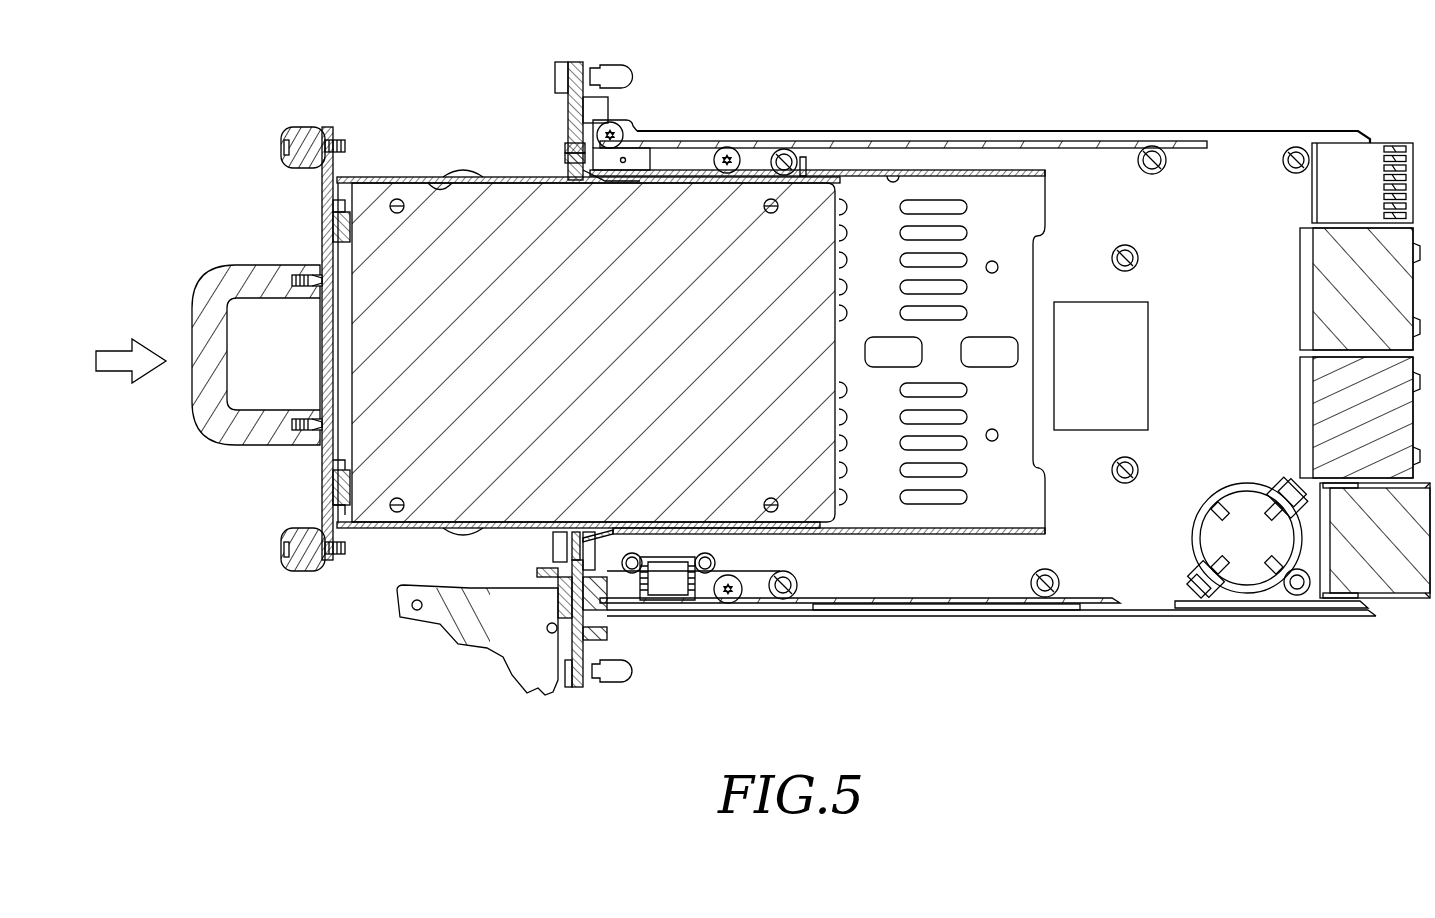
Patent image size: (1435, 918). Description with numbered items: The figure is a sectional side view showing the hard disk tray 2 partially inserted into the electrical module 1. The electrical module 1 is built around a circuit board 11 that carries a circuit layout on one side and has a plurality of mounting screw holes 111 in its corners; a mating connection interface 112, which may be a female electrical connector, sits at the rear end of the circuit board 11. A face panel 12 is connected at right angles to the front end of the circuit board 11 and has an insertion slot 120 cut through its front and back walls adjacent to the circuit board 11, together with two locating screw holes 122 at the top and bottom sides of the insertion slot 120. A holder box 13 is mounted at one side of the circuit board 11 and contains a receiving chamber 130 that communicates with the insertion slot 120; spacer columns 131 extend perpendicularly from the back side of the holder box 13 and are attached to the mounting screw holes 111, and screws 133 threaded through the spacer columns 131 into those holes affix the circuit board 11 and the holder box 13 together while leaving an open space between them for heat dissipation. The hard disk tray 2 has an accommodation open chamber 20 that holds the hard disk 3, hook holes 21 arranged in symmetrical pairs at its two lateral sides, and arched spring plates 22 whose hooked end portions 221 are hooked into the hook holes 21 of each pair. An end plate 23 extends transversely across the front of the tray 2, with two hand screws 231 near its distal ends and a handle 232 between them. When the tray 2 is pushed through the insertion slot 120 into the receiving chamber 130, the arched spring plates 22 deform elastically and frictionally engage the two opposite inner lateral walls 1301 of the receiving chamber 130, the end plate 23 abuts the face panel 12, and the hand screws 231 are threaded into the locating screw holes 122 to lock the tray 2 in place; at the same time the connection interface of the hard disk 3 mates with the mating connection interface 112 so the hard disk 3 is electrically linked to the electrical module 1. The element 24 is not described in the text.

The electrical module 1 is at (1172, 110).
The circuit board 11 is at (1229, 141).
The mounting screw holes 111 is at (1300, 150).
The mating connection interface 112 is at (1108, 316).
The face panel 12 is at (567, 63).
The insertion slot 120 is at (560, 158).
The locating screw holes 122 is at (576, 149).
The holder box 13 is at (957, 141).
The receiving chamber 130 is at (846, 178).
The inner lateral walls 1301 is at (893, 180).
The spacer columns 131 is at (1310, 160).
The screws 133 is at (1289, 151).
The hard disk tray 2 is at (240, 533).
The accommodation open chamber 20 is at (336, 237).
The hook holes 21 is at (632, 182).
The arched spring plates 22 is at (458, 170).
The hooked end portions 221 is at (440, 192).
The end plate 23 is at (325, 478).
The hand screws 231 is at (294, 128).
The handle 232 is at (198, 302).
The screw 24 is at (770, 178).
The hard disk 3 is at (375, 514).